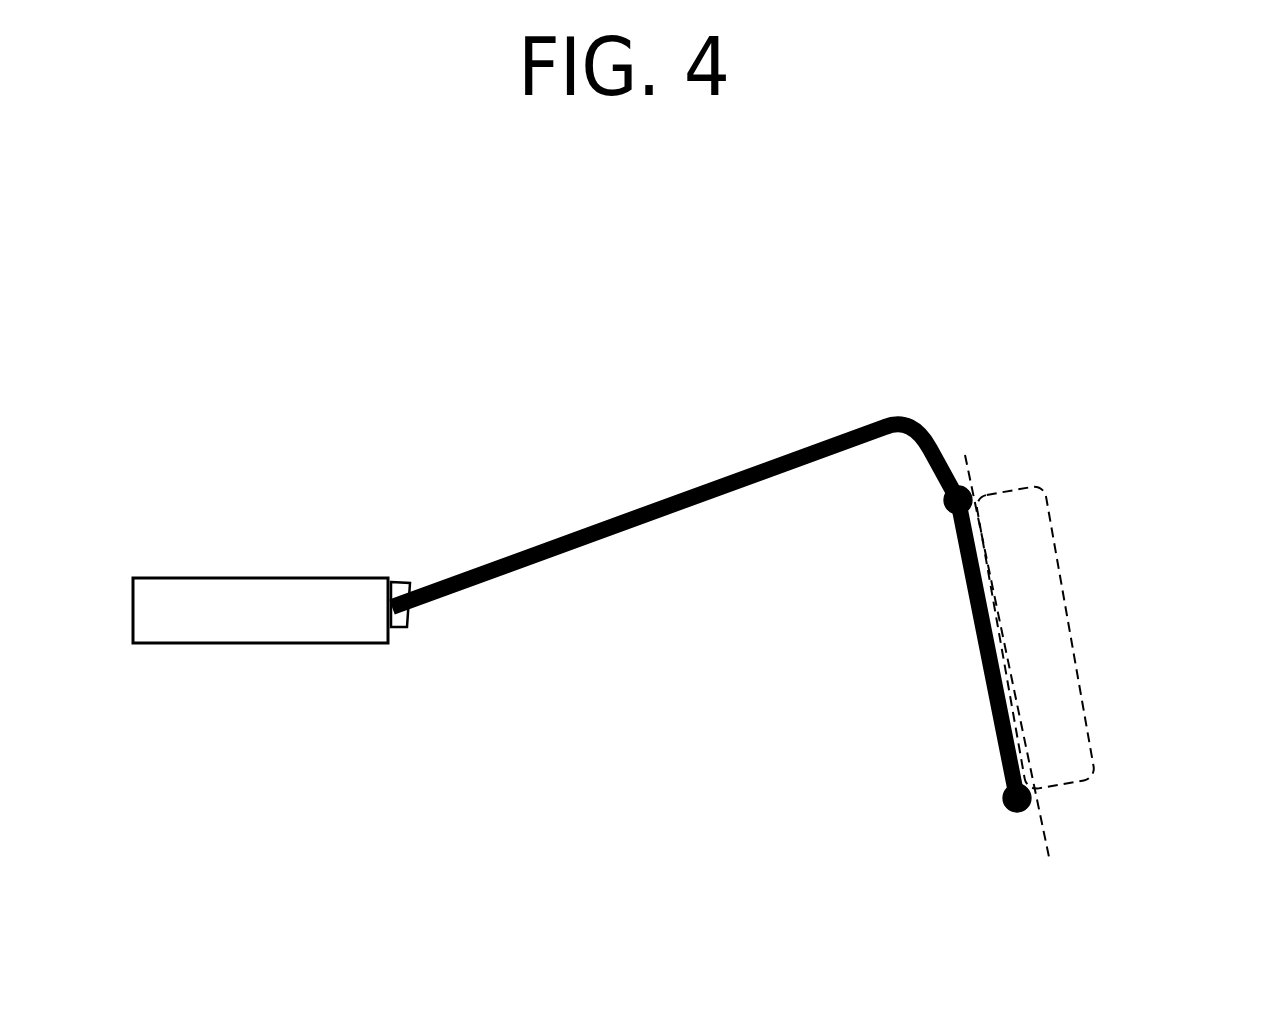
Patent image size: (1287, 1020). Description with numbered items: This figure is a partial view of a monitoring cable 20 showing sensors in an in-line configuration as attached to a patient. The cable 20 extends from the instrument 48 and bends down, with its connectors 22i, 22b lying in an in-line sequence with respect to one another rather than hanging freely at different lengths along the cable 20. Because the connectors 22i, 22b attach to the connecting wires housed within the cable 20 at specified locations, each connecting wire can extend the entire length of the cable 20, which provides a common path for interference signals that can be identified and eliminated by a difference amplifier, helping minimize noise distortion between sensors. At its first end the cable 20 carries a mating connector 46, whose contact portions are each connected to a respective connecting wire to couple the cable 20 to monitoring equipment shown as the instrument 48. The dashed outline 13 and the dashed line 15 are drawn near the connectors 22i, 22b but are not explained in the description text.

The target region 13 is at (1078, 585).
The reference line 15 is at (1047, 843).
The cable 20 is at (495, 583).
The connector 22i is at (973, 492).
The connector 22b is at (1040, 800).
The mating connector 46 is at (393, 580).
The instrument 48 is at (227, 643).